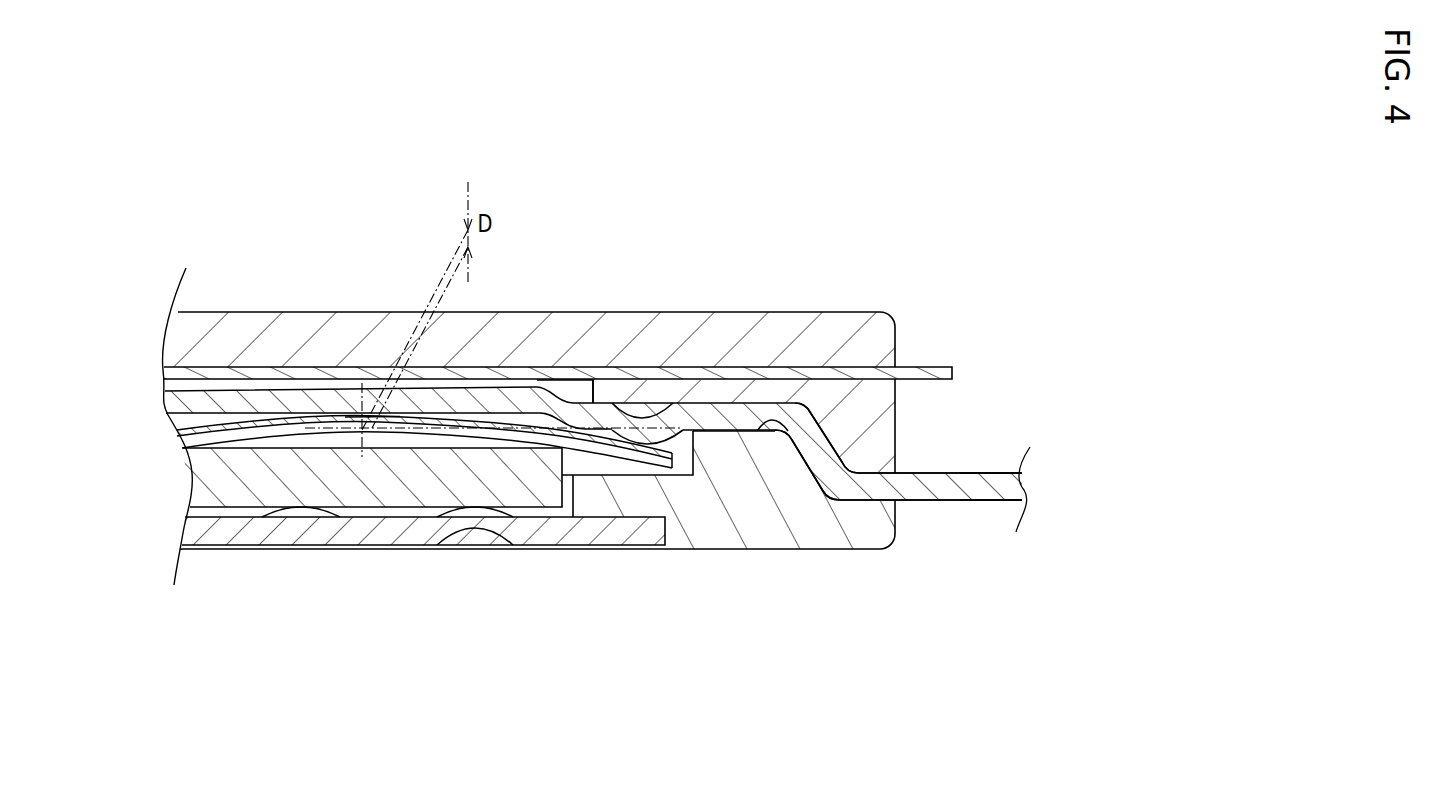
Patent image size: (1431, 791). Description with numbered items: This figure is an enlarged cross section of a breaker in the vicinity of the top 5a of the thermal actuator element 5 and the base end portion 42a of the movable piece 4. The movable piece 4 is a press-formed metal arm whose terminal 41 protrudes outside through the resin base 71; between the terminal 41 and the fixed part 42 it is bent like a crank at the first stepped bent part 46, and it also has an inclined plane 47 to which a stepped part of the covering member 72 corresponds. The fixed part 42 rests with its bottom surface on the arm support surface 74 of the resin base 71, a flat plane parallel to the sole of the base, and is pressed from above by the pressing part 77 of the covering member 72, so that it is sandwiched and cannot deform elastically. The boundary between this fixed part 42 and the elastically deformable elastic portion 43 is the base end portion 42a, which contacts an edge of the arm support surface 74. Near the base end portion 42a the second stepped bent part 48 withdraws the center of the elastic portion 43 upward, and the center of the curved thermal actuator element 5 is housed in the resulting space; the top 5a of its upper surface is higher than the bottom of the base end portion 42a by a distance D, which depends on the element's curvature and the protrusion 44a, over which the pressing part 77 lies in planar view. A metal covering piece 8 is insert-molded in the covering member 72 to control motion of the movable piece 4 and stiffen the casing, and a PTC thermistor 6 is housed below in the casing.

The movable piece 4 is at (967, 493).
The thermal actuator element 5 is at (424, 475).
The top of the thermal actuator element 5a is at (363, 415).
The PTC thermistor 6 is at (358, 487).
The covering piece 8 is at (510, 372).
The terminal 41 is at (993, 492).
The fixed part 42 is at (809, 434).
The base end portion 42a is at (732, 477).
The elastic portion 43 is at (255, 400).
The protrusion 44a is at (633, 418).
The first stepped bent part 46 is at (818, 440).
The inclined plane 47 is at (835, 445).
The second stepped bent part 48 is at (578, 380).
The resin base 71 is at (537, 490).
The covering member 72 is at (549, 326).
The arm support surface 74 is at (787, 433).
The pressing part 77 is at (708, 388).